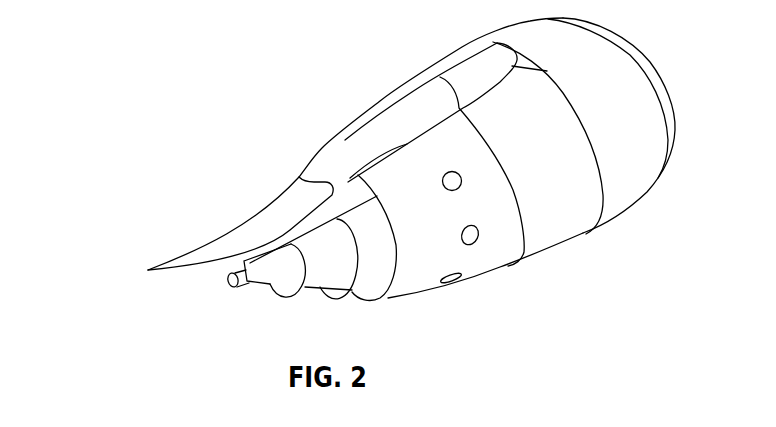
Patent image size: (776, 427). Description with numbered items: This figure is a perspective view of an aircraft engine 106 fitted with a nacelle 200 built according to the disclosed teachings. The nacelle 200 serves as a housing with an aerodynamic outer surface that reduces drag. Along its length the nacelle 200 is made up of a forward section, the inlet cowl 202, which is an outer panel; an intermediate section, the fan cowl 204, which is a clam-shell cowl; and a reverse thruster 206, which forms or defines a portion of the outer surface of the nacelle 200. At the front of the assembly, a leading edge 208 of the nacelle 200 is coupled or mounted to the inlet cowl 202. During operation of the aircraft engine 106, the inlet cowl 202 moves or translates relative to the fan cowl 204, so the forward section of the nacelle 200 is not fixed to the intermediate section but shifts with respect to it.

The aircraft engine 106 is at (271, 65).
The nacelle 200 is at (380, 84).
The inlet cowl 202 is at (641, 170).
The fan cowl 204 is at (577, 228).
The reverse thruster 206 is at (486, 263).
The leading edge 208 is at (669, 111).